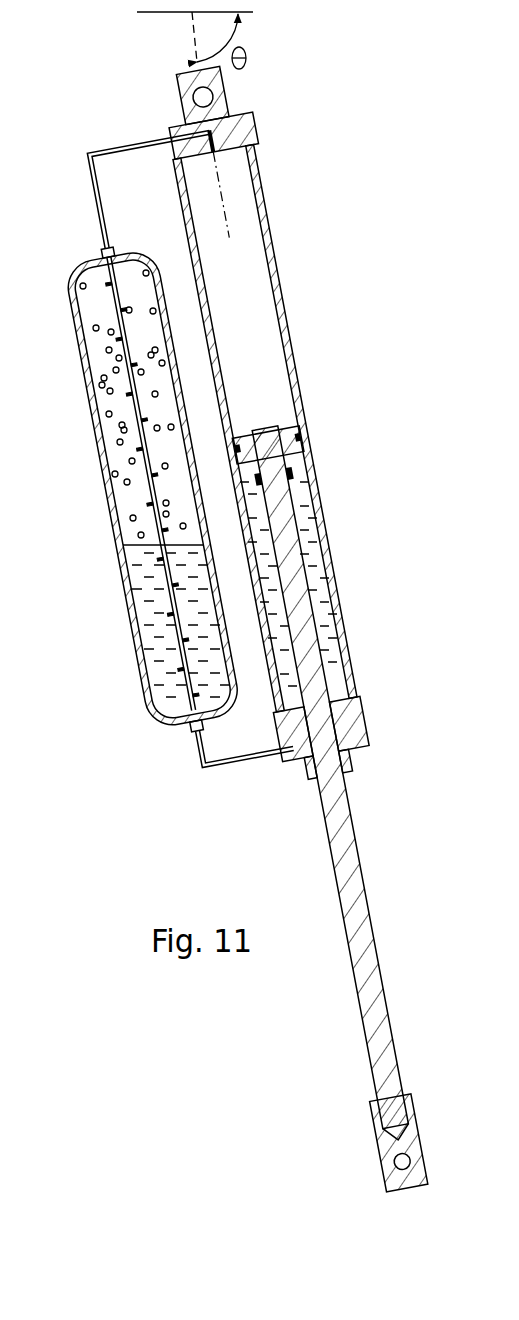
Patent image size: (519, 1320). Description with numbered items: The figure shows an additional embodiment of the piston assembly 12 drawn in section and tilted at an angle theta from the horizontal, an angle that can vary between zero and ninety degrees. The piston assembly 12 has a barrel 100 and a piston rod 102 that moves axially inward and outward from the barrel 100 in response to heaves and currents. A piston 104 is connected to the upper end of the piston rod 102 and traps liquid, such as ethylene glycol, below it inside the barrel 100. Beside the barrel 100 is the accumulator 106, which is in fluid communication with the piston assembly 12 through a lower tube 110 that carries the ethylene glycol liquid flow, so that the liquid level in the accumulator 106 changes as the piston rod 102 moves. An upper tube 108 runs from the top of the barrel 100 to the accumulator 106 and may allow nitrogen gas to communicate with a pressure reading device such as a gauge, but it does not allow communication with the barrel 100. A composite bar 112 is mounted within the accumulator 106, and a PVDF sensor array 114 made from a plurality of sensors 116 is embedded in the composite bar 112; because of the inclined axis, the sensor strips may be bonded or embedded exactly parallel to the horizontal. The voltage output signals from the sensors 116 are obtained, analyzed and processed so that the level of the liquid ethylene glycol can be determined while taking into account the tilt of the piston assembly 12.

The piston assembly 12 is at (236, 629).
The barrel 100 is at (270, 225).
The piston rod 102 is at (326, 828).
The piston 104 is at (268, 432).
The accumulator 106 is at (130, 645).
The upper tube 108 is at (148, 140).
The lower tube 110 is at (235, 770).
The composite bar 112 is at (112, 346).
The PVDF sensor array 114 is at (118, 388).
The sensors 116 is at (140, 477).